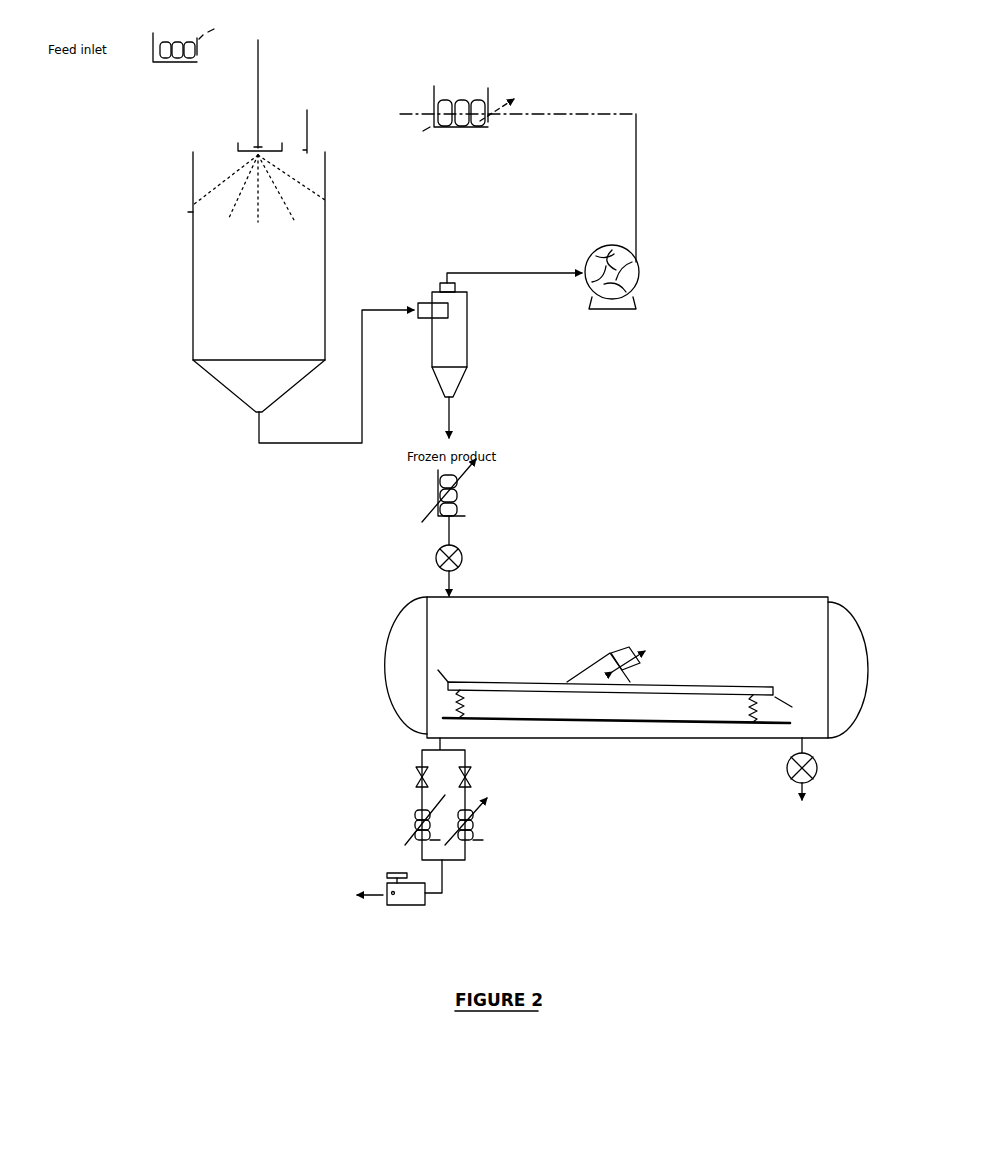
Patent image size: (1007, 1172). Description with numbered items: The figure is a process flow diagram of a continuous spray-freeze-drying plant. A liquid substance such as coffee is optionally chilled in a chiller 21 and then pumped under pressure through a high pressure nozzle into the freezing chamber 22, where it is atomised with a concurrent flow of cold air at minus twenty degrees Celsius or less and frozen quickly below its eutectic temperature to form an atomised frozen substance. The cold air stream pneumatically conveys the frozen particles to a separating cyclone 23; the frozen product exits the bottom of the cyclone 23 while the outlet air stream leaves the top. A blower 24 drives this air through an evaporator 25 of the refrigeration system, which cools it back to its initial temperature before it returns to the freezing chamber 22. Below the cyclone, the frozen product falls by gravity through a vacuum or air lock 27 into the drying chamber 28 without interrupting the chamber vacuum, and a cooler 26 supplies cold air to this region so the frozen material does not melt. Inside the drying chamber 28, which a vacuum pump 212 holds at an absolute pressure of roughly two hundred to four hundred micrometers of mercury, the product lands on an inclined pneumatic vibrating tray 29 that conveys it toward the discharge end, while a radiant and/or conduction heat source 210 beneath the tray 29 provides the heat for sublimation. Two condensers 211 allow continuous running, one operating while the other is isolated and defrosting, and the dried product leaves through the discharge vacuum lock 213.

The chiller 21 is at (184, 58).
The freezing chamber 22 is at (301, 241).
The separating cyclone 23 is at (500, 355).
The blower 24 is at (622, 223).
The evaporator 25 is at (518, 121).
The cooler 26 is at (482, 502).
The vacuum or air lock 27 is at (484, 570).
The drying chamber 28 is at (626, 660).
The inclined pneumatic vibrating tray 29 is at (615, 677).
The heat source 210 is at (616, 706).
The condensers 211 is at (503, 799).
The vacuum pump 212 is at (398, 896).
The discharge vacuum lock 213 is at (836, 781).